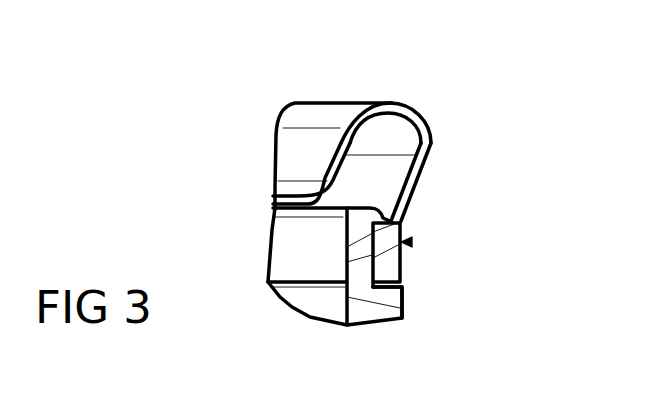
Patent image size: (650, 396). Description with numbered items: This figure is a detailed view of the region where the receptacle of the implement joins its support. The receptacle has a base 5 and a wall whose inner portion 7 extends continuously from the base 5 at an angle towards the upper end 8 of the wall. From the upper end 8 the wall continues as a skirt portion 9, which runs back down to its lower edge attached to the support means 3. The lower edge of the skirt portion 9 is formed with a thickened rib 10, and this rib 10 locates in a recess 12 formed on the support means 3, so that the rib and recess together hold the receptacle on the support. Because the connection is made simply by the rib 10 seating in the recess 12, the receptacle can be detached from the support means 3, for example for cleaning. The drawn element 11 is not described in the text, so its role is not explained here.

The support means 3 is at (289, 232).
The base 5 is at (310, 155).
The inner portion 7 is at (342, 146).
The upper end 8 is at (400, 103).
The skirt portion 9 is at (430, 178).
The thickened rib 10 is at (412, 241).
The slot 11 is at (388, 259).
The recess 12 is at (385, 278).